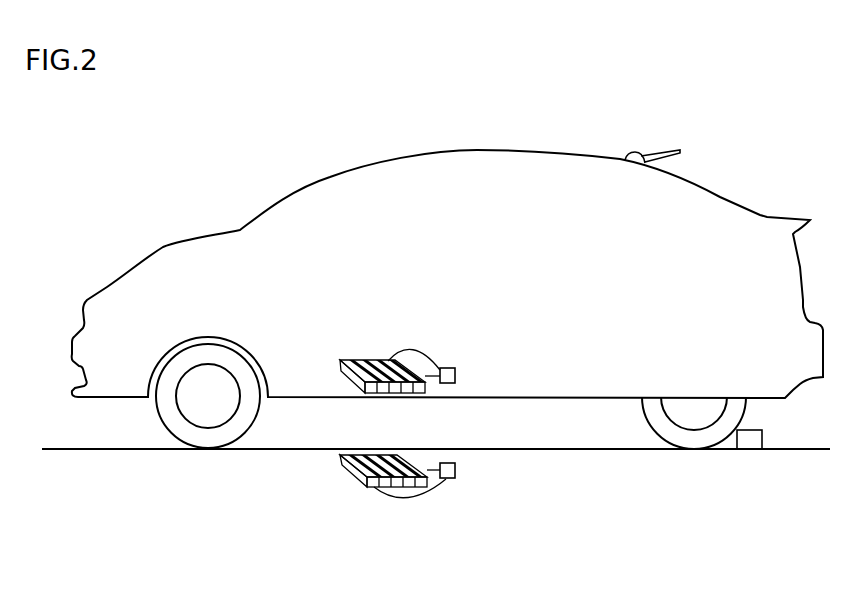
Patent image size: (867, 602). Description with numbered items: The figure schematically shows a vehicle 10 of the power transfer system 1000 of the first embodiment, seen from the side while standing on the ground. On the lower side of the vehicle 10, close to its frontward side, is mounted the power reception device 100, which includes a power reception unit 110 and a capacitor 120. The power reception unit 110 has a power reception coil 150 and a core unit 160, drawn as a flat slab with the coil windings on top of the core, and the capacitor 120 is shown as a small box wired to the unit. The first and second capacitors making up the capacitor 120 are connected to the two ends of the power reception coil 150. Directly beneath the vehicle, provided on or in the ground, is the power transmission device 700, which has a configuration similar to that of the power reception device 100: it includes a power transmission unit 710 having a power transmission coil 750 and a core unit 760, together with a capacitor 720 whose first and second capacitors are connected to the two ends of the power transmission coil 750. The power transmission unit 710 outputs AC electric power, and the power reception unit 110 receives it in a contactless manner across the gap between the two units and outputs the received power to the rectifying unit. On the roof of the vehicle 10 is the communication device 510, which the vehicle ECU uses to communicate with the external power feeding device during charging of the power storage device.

The power transfer system 1000 is at (150, 116).
The vehicle 10 is at (271, 195).
The communication device 510 is at (663, 150).
The power reception device 100 is at (459, 314).
The power reception unit 110 is at (486, 149).
The capacitor 120 is at (448, 367).
The power reception coil 150 is at (361, 385).
The core unit 160 is at (341, 367).
The power transmission device 700 is at (459, 537).
The power transmission unit 710 is at (368, 495).
The capacitor 720 is at (450, 479).
The power transmission coil 750 is at (360, 466).
The core unit 760 is at (358, 476).